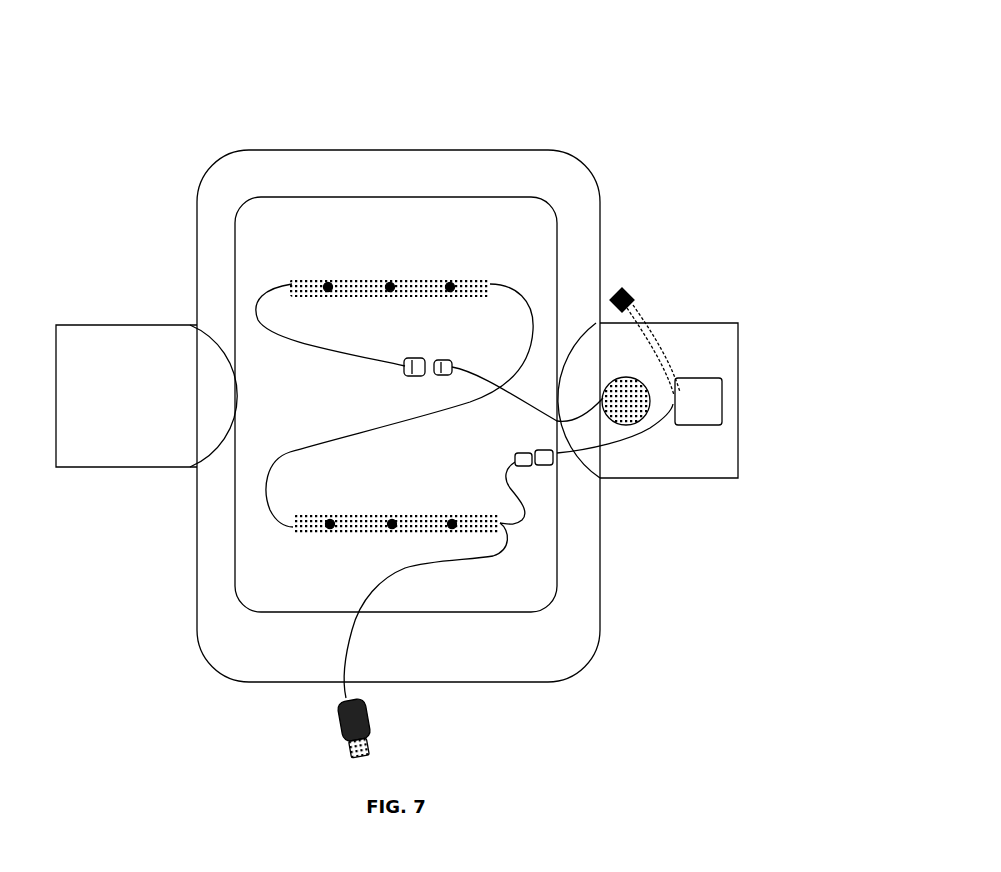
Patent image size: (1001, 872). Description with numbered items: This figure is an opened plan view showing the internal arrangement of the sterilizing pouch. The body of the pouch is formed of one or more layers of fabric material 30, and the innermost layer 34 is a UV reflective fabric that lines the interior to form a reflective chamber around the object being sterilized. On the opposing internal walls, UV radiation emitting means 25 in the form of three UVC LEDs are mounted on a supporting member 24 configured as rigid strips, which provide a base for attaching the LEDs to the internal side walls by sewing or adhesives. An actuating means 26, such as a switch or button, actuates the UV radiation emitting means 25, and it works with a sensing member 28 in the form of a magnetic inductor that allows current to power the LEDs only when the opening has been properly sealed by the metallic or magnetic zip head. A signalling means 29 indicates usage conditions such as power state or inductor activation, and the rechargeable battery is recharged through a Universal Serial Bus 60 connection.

The supporting member 24 is at (477, 283).
The ultraviolet radiation emitting means 25 is at (330, 282).
The actuating means 26 is at (634, 390).
The sensing member 28 is at (702, 398).
The signalling means 29 is at (630, 290).
The fabric material 30 is at (520, 583).
The innermost layer 34 is at (459, 590).
The Universal Serial Bus 60 is at (340, 738).